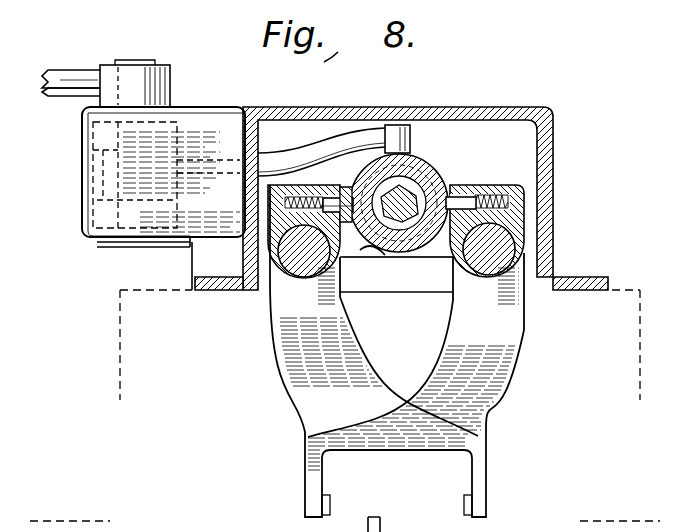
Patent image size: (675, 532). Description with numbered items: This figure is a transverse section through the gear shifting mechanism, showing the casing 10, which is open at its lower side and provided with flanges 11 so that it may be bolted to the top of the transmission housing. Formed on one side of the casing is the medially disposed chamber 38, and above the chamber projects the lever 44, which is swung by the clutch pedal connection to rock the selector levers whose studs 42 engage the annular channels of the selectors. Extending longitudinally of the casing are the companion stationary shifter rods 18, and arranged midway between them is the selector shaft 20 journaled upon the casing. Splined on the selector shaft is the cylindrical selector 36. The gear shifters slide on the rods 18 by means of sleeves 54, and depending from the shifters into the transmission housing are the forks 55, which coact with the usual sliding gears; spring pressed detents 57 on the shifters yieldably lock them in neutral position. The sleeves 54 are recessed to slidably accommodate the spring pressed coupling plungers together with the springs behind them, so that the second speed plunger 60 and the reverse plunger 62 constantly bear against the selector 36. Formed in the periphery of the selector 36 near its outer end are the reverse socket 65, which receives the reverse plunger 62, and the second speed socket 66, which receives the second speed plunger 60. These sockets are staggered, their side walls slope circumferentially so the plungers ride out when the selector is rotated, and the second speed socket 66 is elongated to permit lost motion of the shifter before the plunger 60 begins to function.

The casing 10 is at (465, 107).
The flanges 11 is at (215, 292).
The stationary shifter rods 18 is at (305, 272).
The selector shaft 20 is at (403, 228).
The selector 36 is at (432, 182).
The chamber 38 is at (94, 184).
The studs 42 is at (411, 151).
The lever 44 is at (61, 74).
The sleeves 54 is at (280, 198).
The forks 55 is at (397, 351).
The spring pressed detents 57 is at (276, 164).
The second speed plunger 60 is at (335, 197).
The reverse plunger 62 is at (466, 203).
The reverse socket 65 is at (367, 257).
The second speed socket 66 is at (349, 186).